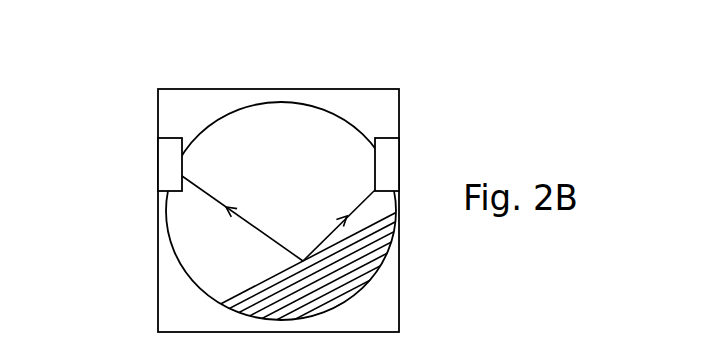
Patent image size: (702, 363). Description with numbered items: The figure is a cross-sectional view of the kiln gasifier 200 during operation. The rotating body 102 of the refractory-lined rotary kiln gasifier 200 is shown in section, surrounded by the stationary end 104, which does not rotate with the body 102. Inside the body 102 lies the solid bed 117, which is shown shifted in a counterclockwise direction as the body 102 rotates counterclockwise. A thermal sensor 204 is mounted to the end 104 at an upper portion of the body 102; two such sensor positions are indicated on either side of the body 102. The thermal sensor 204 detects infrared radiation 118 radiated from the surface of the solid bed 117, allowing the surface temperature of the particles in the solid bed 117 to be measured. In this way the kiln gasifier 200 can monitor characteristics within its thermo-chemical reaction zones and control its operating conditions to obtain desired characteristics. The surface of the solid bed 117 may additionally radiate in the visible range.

The kiln gasifier 200 is at (333, 68).
The body 102 is at (213, 122).
The end 104 is at (173, 290).
The thermal sensor 204 is at (162, 167).
The solid bed 117 is at (281, 271).
The infrared radiation 118 is at (338, 209).